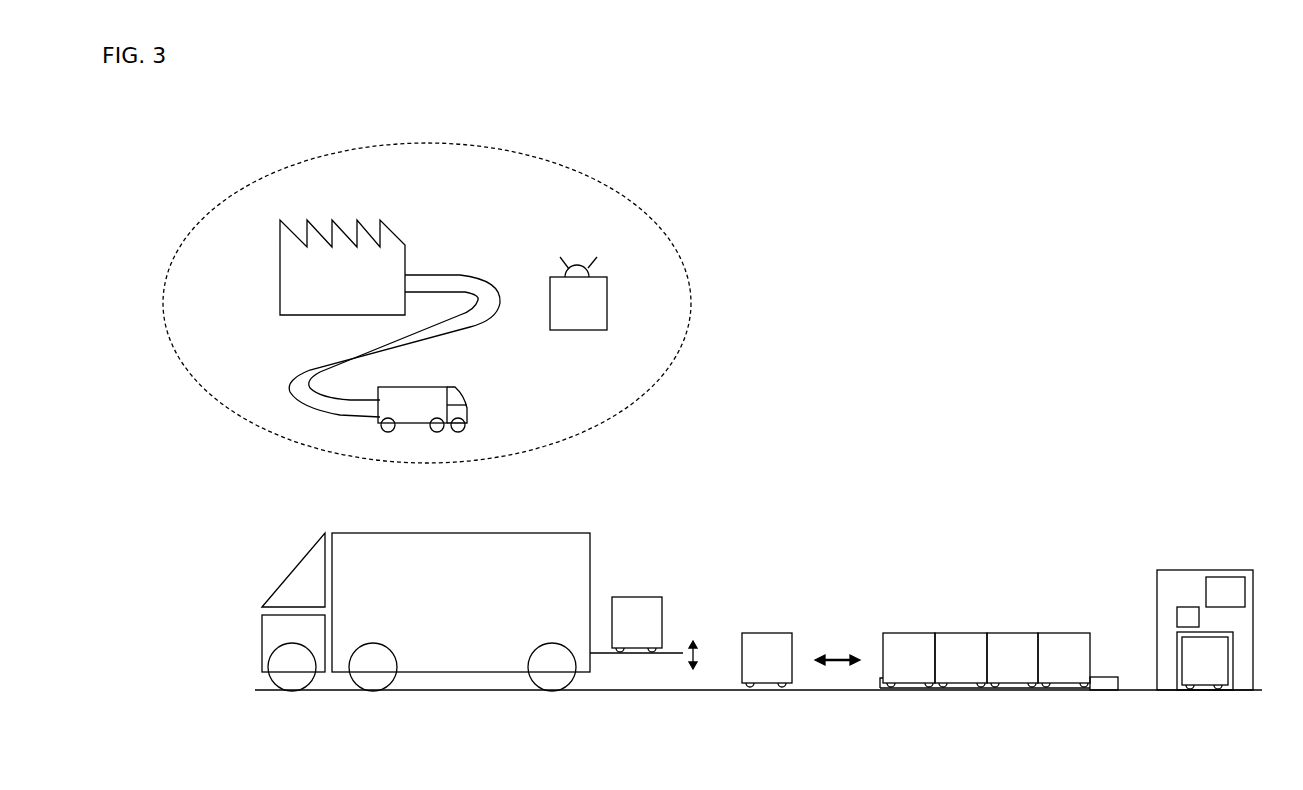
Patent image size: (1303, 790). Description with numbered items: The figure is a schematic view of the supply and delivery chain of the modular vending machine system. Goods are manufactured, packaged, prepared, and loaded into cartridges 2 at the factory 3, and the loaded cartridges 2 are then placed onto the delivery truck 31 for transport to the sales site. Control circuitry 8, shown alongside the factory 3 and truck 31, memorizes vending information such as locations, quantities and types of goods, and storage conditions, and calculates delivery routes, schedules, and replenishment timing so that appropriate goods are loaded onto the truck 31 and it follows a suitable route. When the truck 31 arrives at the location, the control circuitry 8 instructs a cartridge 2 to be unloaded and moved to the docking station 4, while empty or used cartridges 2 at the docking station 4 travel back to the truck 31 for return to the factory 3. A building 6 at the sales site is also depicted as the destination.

The factory 3 is at (381, 196).
The control circuitry 8 is at (577, 241).
The delivery truck 31 is at (462, 380).
The cartridge 2 is at (742, 645).
The docking station 4 is at (1100, 676).
The store building 6 is at (1177, 570).